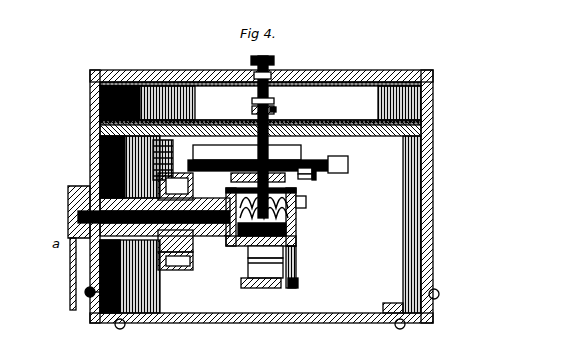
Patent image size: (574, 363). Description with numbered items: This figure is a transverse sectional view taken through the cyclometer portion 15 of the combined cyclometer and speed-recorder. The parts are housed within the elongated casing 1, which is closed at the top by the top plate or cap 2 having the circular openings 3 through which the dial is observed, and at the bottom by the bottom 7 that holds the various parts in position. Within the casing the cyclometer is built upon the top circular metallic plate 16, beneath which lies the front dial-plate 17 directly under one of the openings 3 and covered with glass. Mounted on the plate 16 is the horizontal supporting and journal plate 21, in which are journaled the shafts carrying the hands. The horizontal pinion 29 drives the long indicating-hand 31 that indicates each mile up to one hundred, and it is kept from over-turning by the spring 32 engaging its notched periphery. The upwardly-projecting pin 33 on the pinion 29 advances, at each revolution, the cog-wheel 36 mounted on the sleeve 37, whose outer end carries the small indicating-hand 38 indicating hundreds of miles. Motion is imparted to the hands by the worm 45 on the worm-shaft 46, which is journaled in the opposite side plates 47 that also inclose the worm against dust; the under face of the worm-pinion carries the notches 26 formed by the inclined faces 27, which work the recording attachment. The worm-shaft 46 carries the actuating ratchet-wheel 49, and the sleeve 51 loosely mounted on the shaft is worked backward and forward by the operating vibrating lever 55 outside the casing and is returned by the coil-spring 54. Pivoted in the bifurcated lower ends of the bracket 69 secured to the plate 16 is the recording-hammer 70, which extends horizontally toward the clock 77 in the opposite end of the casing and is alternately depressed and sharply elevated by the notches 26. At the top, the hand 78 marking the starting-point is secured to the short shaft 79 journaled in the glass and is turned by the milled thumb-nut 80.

The casing 1 is at (425, 88).
The top plate or cap 2 is at (425, 66).
The circular openings 3 is at (112, 62).
The bottom 7 is at (252, 315).
The distance-meter or cyclometer portion 15 is at (413, 168).
The top circular metallic plate 16 is at (92, 128).
The front dial-plate 17 is at (365, 106).
The horizontal supporting and journal plate 21 is at (306, 172).
The notches 26 is at (212, 228).
The inclined faces 27 is at (288, 232).
The horizontal pinion 29 is at (300, 170).
The long indicating-hand 31 is at (244, 93).
The spring 32 is at (340, 155).
The upwardly-projecting pin 33 is at (205, 143).
The cog-wheel 36 is at (296, 166).
The sleeve 37 is at (244, 103).
The small indicating-hand 38 is at (268, 101).
The worm 45 is at (288, 212).
The worm-shaft 46 is at (154, 217).
The side plates 47 is at (298, 194).
The actuating ratchet-wheel 49 is at (212, 242).
The sleeve 51 is at (88, 157).
The coil-spring 54 is at (40, 250).
The operating vibrating lever 55 is at (60, 282).
The bracket 69 is at (225, 255).
The recording-hammer 70 is at (238, 280).
The clock 77 is at (288, 262).
The hand 78 is at (262, 82).
The short shaft 79 is at (263, 67).
The milled thumb-nut 80 is at (266, 51).